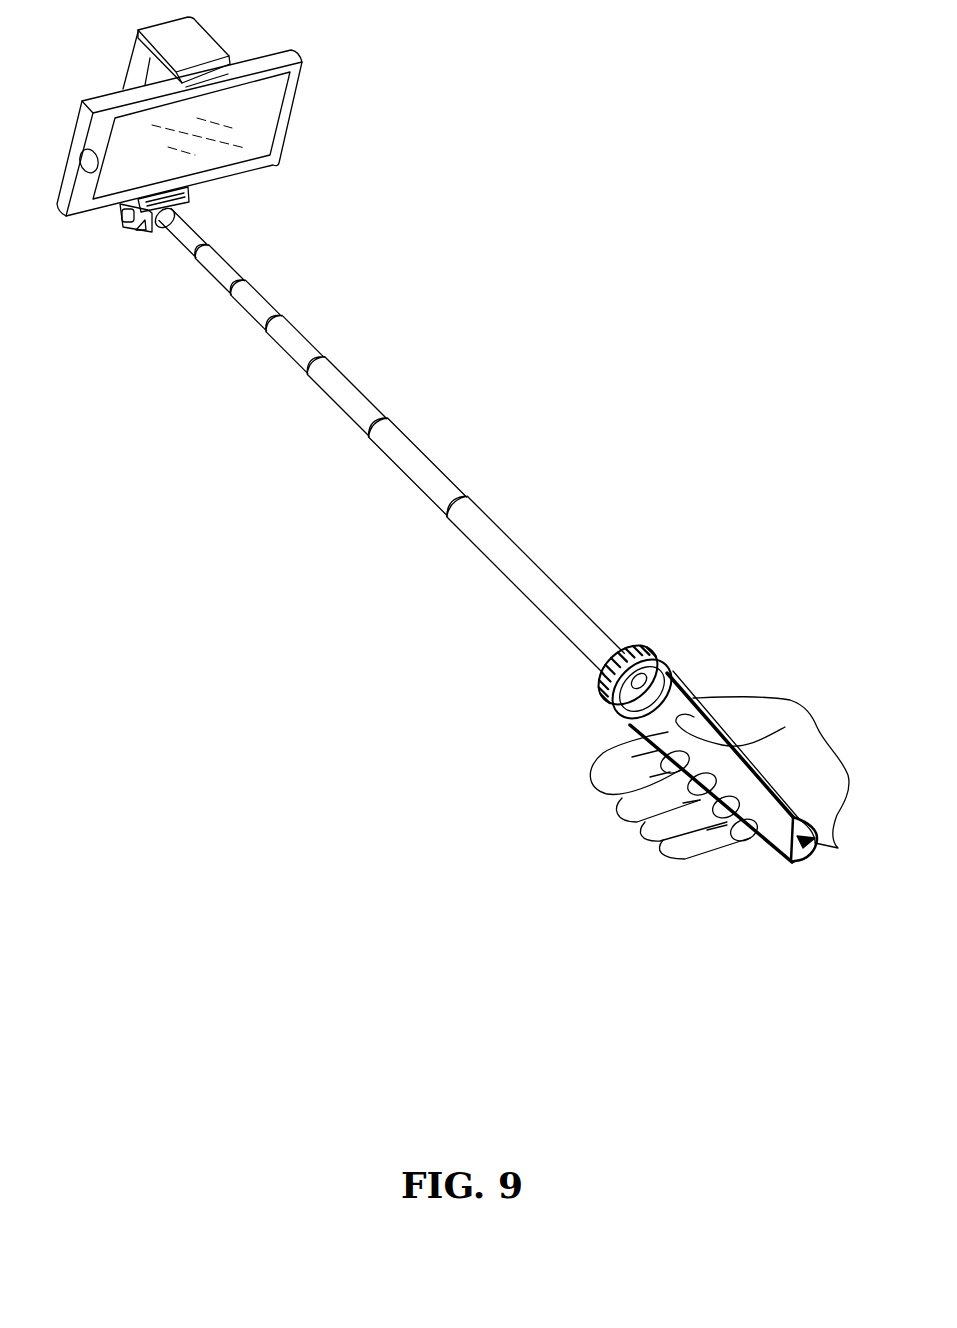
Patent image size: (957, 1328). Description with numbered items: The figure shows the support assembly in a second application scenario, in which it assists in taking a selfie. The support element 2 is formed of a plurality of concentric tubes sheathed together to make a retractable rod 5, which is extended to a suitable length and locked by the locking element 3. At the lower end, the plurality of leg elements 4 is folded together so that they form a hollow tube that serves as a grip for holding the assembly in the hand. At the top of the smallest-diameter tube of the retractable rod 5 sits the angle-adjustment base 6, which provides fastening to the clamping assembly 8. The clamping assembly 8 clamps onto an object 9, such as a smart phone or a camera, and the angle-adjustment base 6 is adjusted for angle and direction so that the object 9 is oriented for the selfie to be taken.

The support element 2 is at (532, 582).
The locking element 3 is at (602, 682).
The leg elements 4 is at (630, 724).
The retractable rod 5 is at (488, 551).
The angle-adjustment base 6 is at (127, 240).
The clamping assembly 8 is at (182, 43).
The object 9 is at (262, 128).